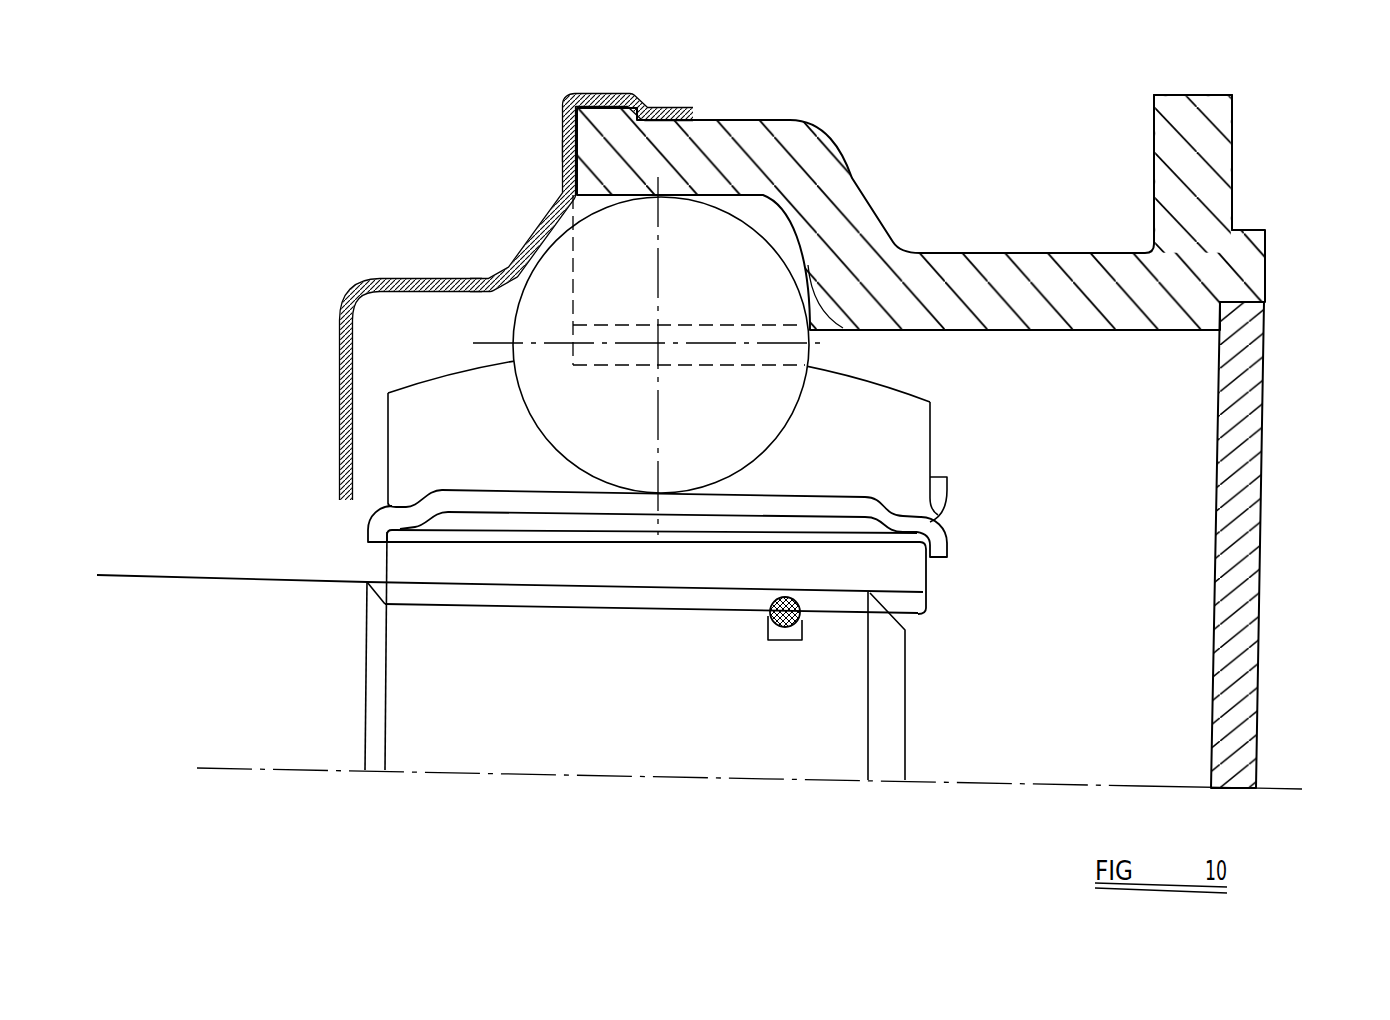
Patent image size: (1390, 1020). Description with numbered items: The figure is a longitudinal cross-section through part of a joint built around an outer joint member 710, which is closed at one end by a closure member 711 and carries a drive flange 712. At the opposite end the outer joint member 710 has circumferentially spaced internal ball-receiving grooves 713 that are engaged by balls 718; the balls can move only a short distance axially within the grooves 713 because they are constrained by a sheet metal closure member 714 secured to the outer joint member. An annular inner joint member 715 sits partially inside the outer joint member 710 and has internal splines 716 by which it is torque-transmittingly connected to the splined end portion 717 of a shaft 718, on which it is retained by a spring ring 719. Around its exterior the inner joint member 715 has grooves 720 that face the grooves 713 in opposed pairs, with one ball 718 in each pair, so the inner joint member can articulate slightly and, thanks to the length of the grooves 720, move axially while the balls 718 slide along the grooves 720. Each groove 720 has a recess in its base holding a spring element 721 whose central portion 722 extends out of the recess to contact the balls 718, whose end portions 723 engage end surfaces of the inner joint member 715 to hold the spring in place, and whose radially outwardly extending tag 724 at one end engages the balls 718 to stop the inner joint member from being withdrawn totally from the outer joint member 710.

The outer joint member 710 is at (823, 170).
The closure member 711 is at (1262, 432).
The drive flange 712 is at (1217, 165).
The internal ball-receiving grooves 713 is at (773, 227).
The closure member 714 is at (387, 275).
The inner joint member 715 is at (910, 567).
The internal splines 716 is at (915, 614).
The splined end portion 717 is at (672, 698).
The shaft 718 is at (503, 267).
The spring ring 719 is at (802, 630).
The grooves 720 is at (910, 422).
The spring element 721 is at (857, 487).
The central portion 722 is at (773, 507).
The end portions 723 is at (948, 547).
The radially outwardly extending tag 724 is at (947, 492).